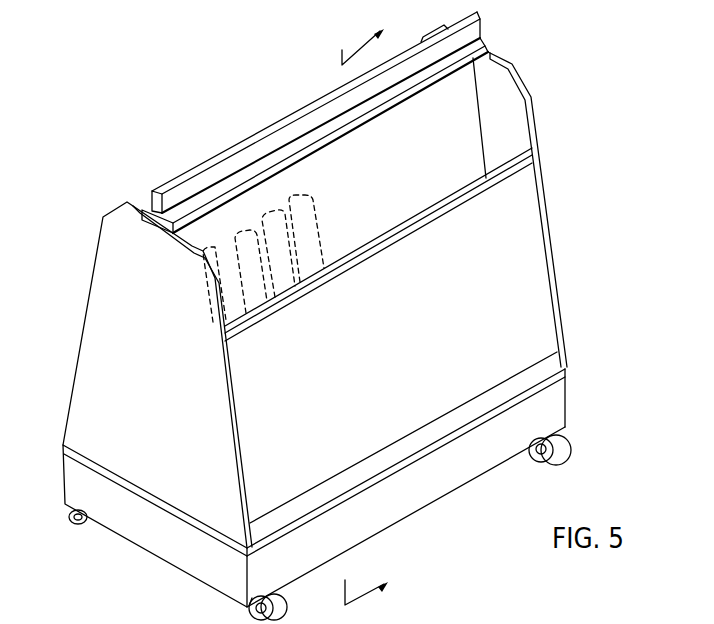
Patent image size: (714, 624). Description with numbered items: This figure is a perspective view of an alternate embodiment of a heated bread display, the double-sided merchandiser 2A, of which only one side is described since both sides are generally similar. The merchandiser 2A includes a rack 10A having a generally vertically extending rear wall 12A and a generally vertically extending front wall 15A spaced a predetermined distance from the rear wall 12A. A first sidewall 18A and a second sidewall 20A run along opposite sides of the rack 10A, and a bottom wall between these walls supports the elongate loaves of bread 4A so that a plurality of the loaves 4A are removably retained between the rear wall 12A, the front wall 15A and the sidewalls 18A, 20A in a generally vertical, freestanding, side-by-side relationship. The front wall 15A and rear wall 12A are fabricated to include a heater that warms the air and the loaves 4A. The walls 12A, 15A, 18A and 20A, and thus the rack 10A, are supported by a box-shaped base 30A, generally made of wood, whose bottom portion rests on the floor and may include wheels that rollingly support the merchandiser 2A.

The heated merchandiser 2A is at (140, 76).
The loaves of bread 4A is at (277, 252).
The rack 10A is at (502, 145).
The rear wall 12A is at (466, 108).
The front wall 15A is at (514, 302).
The first sidewall 18A is at (100, 297).
The second sidewall 20A is at (549, 208).
The base 30A is at (433, 494).